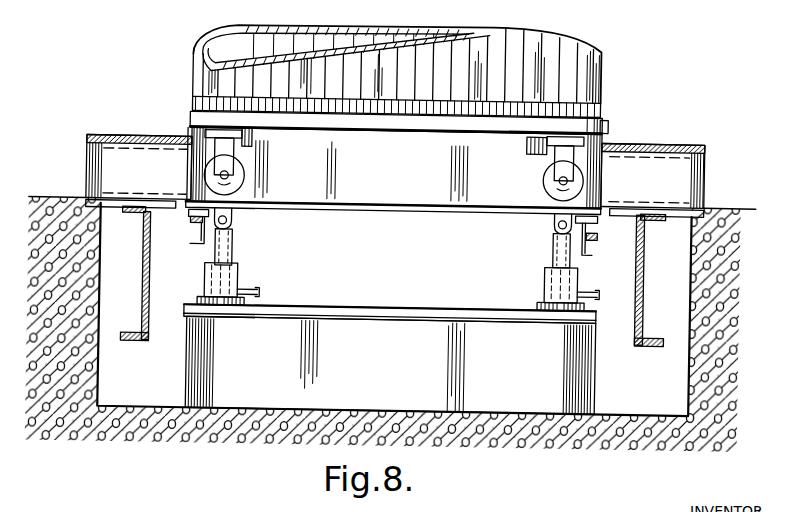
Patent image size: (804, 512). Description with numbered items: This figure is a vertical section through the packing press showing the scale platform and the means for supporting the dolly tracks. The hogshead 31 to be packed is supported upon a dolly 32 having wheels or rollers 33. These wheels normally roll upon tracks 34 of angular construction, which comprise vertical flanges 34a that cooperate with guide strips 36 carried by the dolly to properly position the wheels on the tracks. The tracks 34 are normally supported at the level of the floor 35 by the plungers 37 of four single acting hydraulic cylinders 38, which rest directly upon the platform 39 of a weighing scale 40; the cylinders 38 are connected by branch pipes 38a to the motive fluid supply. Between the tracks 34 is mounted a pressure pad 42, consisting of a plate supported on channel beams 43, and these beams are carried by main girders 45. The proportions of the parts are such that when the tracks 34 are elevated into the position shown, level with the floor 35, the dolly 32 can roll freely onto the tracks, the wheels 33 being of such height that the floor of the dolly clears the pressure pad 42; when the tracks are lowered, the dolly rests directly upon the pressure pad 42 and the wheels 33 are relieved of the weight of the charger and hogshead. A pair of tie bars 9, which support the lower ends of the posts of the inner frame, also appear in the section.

The tie bars 9 is at (203, 244).
The hogshead 31 is at (598, 76).
The dolly 32 is at (607, 125).
The wheels or rollers 33 is at (242, 183).
The tracks 34 is at (498, 212).
The vertical flanges 34a is at (398, 184).
The floor 35 is at (640, 204).
The guide strips 36 is at (183, 154).
The plungers 37 is at (228, 248).
The single acting hydraulic cylinders 38 is at (232, 278).
The branch pipes 38a is at (258, 298).
The platform 39 is at (360, 317).
The weighing scale 40 is at (203, 366).
The pressure pad 42 is at (683, 140).
The channel beams 43 is at (137, 161).
The main girders 45 is at (143, 296).